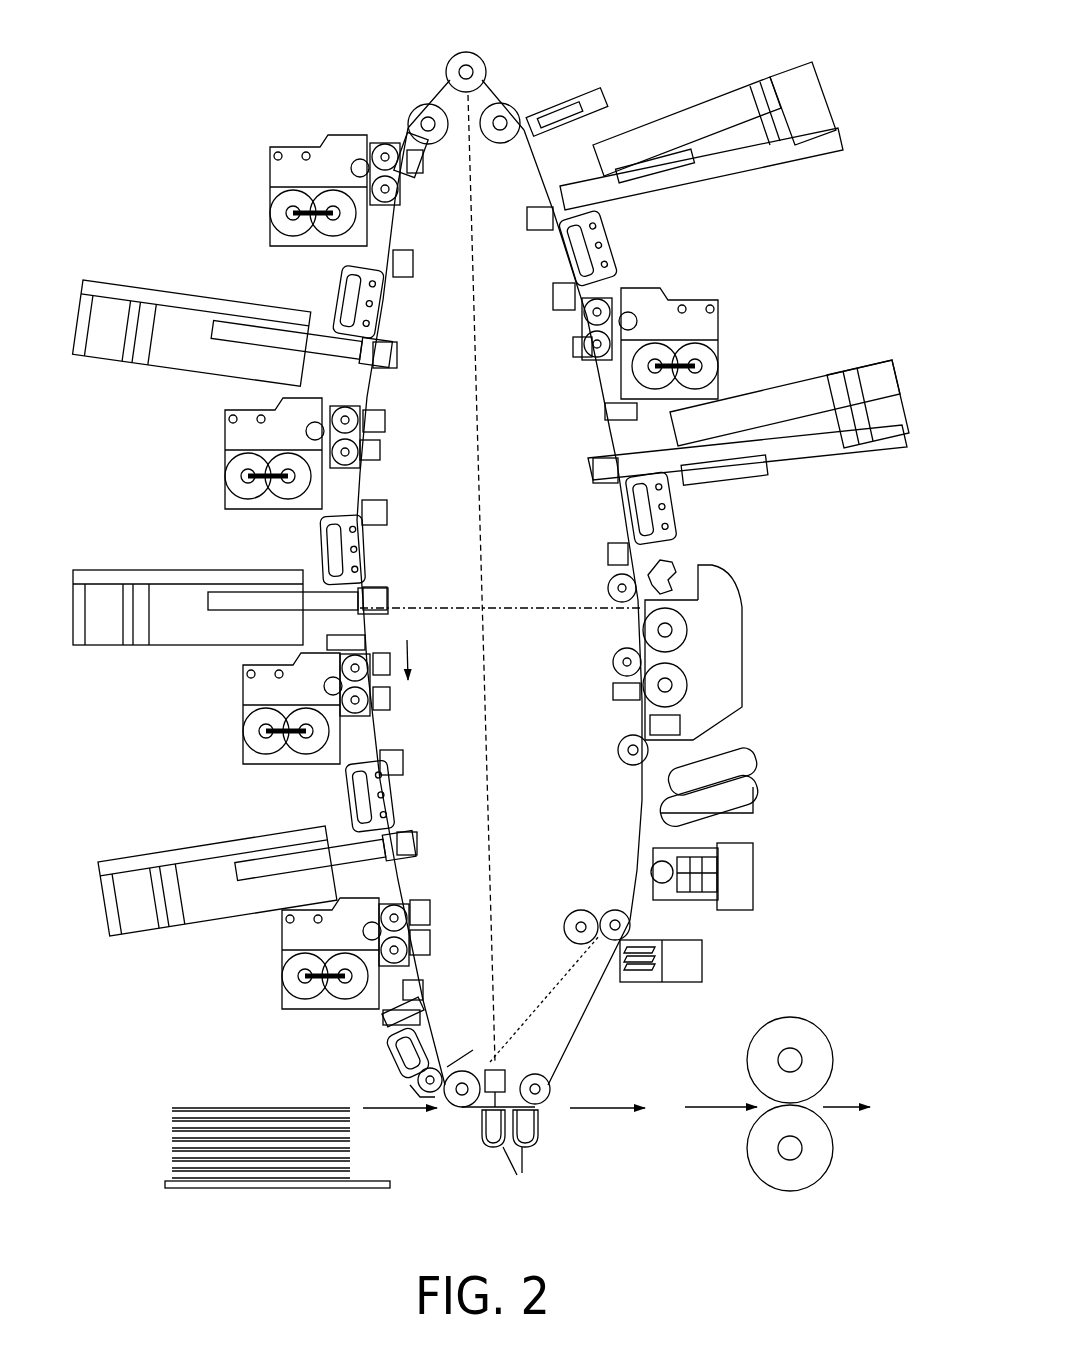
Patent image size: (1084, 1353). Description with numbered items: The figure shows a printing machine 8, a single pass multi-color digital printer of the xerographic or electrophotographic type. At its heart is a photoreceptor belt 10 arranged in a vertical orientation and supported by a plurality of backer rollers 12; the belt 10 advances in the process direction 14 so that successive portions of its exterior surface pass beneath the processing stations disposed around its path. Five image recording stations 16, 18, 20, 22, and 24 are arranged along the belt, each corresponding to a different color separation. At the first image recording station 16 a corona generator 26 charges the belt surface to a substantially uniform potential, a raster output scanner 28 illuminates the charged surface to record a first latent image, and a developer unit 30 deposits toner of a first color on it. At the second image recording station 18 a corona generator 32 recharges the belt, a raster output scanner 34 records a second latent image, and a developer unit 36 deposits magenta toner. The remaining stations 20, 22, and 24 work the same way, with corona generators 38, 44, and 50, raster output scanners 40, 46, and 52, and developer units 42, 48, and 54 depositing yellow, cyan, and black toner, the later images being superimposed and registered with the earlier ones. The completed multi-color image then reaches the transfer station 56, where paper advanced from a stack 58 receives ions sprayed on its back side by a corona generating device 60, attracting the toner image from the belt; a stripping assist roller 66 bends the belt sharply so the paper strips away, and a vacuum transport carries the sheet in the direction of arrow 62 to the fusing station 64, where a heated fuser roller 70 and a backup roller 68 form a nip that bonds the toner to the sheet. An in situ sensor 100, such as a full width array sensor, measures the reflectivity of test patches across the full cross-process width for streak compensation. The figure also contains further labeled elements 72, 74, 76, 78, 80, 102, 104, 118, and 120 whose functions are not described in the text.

The printing machine 8 is at (300, 42).
The photoreceptor belt 10 is at (588, 1017).
The backer rollers 12 is at (417, 168).
The process direction 14 is at (408, 648).
The image recording station 16 is at (855, 355).
The image recording station 18 is at (823, 60).
The image recording station 20 is at (182, 252).
The image recording station 22 is at (177, 547).
The image recording station 24 is at (200, 818).
The corona generator 26 is at (678, 515).
The raster output scanner 28 is at (855, 440).
The developer unit 30 is at (718, 330).
The corona generator 32 is at (615, 262).
The raster output scanner 34 is at (822, 130).
The developer unit 36 is at (305, 150).
The corona generator 38 is at (343, 270).
The raster output scanner 40 is at (100, 368).
The developer unit 42 is at (225, 437).
The corona generator 44 is at (318, 543).
The raster output scanner 46 is at (93, 648).
The developer unit 48 is at (245, 688).
The corona generator 50 is at (348, 790).
The raster output scanner 52 is at (197, 920).
The developer unit 54 is at (283, 983).
The transfer station 56 is at (485, 1162).
The stack 58 is at (295, 1188).
The corona generating device 60 is at (520, 1160).
The arrow 62 is at (602, 1110).
The fusing station 64 is at (805, 1000).
The stripping assist roller 66 is at (537, 1075).
The backup roller 68 is at (823, 1173).
The heated fuser roller 70 is at (817, 1037).
The insertion module 72 is at (760, 600).
The belt roller 74 is at (595, 912).
The drive roller 76 is at (472, 66).
The idler roller 78 is at (620, 757).
The diverter gate 80 is at (663, 560).
The in situ sensor 100 is at (723, 753).
The controller 102 is at (757, 863).
The power supply 104 is at (703, 958).
The horizontal axis 118 is at (550, 607).
The vertical axis 120 is at (483, 312).